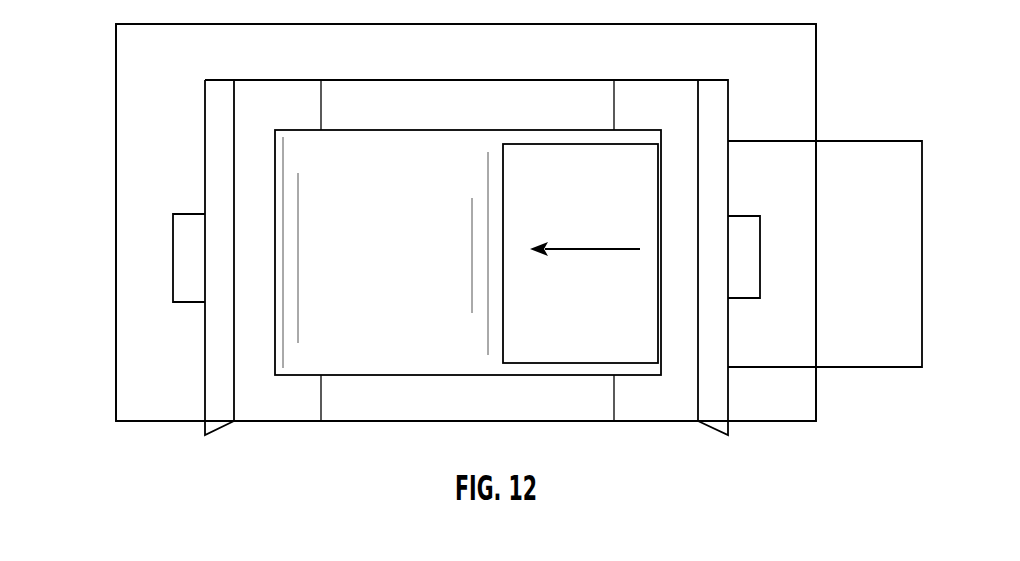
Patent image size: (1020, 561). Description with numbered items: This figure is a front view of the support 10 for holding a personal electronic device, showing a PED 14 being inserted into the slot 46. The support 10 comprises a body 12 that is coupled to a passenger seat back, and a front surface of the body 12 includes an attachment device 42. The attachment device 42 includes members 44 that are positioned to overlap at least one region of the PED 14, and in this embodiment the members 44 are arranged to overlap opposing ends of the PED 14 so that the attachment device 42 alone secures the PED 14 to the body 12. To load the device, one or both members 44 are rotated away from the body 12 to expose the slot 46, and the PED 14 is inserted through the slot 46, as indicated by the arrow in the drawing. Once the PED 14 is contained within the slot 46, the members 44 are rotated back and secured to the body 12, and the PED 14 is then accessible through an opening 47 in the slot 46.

The support 10 is at (100, 62).
The body 12 is at (156, 183).
The personal electronic device 14 is at (800, 344).
The attachment device 42 is at (266, 396).
The members 44 is at (222, 298).
The slot 46 is at (745, 193).
The opening 47 is at (425, 320).